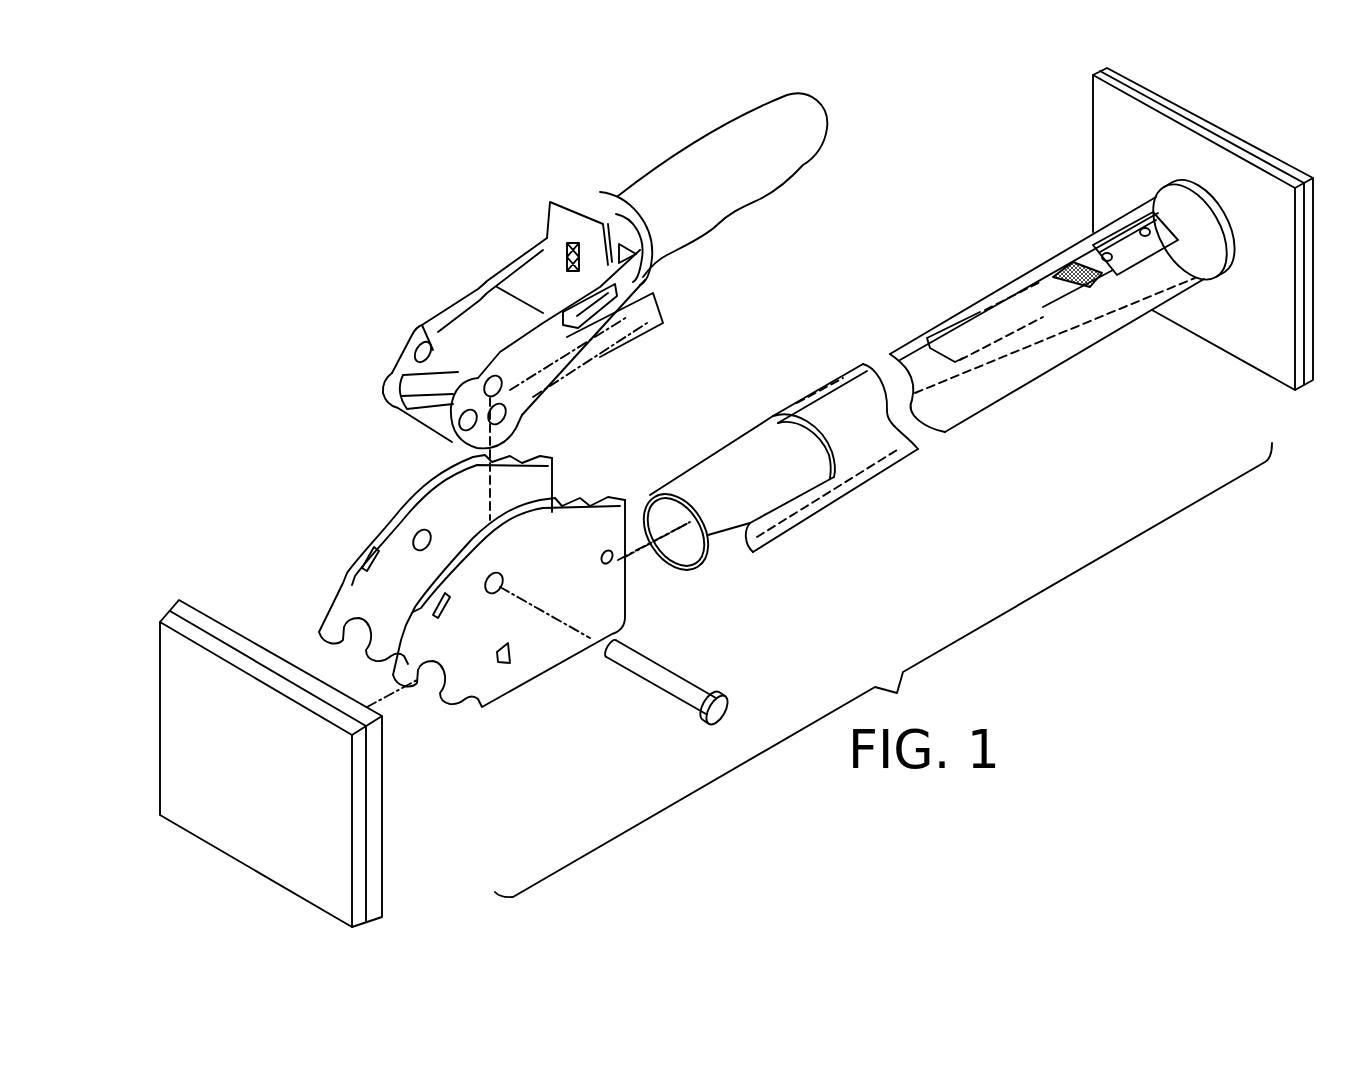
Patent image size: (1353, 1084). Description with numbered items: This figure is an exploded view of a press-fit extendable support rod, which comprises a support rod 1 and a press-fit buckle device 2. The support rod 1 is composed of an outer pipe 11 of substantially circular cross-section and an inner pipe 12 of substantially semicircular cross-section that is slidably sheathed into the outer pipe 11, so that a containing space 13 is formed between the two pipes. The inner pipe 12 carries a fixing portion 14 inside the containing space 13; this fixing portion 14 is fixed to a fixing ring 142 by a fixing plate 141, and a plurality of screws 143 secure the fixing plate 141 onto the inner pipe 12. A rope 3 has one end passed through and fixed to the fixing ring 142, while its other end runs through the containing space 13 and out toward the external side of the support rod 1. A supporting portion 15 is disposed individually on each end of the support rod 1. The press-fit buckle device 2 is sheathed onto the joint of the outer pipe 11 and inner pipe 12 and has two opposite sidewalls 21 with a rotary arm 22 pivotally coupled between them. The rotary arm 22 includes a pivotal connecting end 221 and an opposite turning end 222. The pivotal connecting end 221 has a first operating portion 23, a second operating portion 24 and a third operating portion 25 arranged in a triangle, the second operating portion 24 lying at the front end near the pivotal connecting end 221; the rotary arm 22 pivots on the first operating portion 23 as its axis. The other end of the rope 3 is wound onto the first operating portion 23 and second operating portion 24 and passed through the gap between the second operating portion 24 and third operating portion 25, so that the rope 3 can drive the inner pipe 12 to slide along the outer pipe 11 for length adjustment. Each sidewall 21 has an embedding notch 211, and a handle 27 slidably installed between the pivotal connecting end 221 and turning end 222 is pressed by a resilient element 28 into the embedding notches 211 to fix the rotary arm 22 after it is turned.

The support rod 1 is at (930, 344).
The outer pipe 11 is at (838, 390).
The inner pipe 12 is at (725, 463).
The containing space 13 is at (770, 420).
The fixing portion 14 is at (1066, 269).
The fixing plate 141 is at (1107, 252).
The fixing ring 142 is at (1100, 252).
The screws 143 is at (1143, 228).
The supporting portion 15 is at (165, 688).
The press-fit buckle device 2 is at (562, 297).
The sidewalls 21 is at (494, 552).
The embedding notch 211 is at (518, 466).
The rotary arm 22 is at (713, 192).
The pivotal connecting end 221 is at (385, 378).
The turning end 222 is at (688, 152).
The first operating portion 23 is at (676, 678).
The second operating portion 24 is at (402, 388).
The third operating portion 25 is at (445, 382).
The handle 27 is at (517, 273).
The resilient element 28 is at (568, 246).
The rope 3 is at (630, 333).